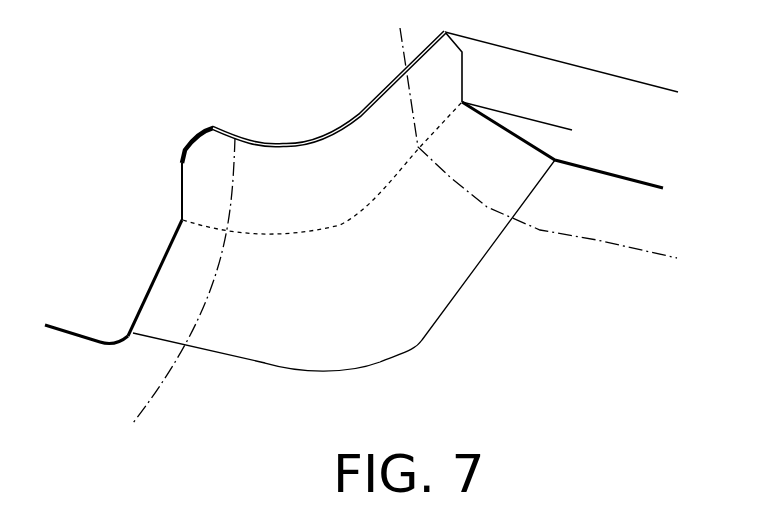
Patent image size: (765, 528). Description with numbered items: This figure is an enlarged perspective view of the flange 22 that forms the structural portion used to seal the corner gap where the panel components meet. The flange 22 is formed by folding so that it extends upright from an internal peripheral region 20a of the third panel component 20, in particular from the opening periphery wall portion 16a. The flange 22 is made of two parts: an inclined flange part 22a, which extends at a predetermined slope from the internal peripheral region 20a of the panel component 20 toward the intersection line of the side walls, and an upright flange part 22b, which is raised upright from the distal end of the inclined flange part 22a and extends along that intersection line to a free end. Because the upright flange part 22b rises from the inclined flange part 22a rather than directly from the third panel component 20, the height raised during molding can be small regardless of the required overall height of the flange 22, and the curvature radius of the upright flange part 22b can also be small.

The third panel component 20 is at (366, 225).
The opening periphery wall portion 16a is at (588, 348).
The internal peripheral region 20a is at (67, 327).
The flange 22 is at (252, 184).
The inclined flange part 22a is at (175, 245).
The upright flange part 22b is at (182, 190).